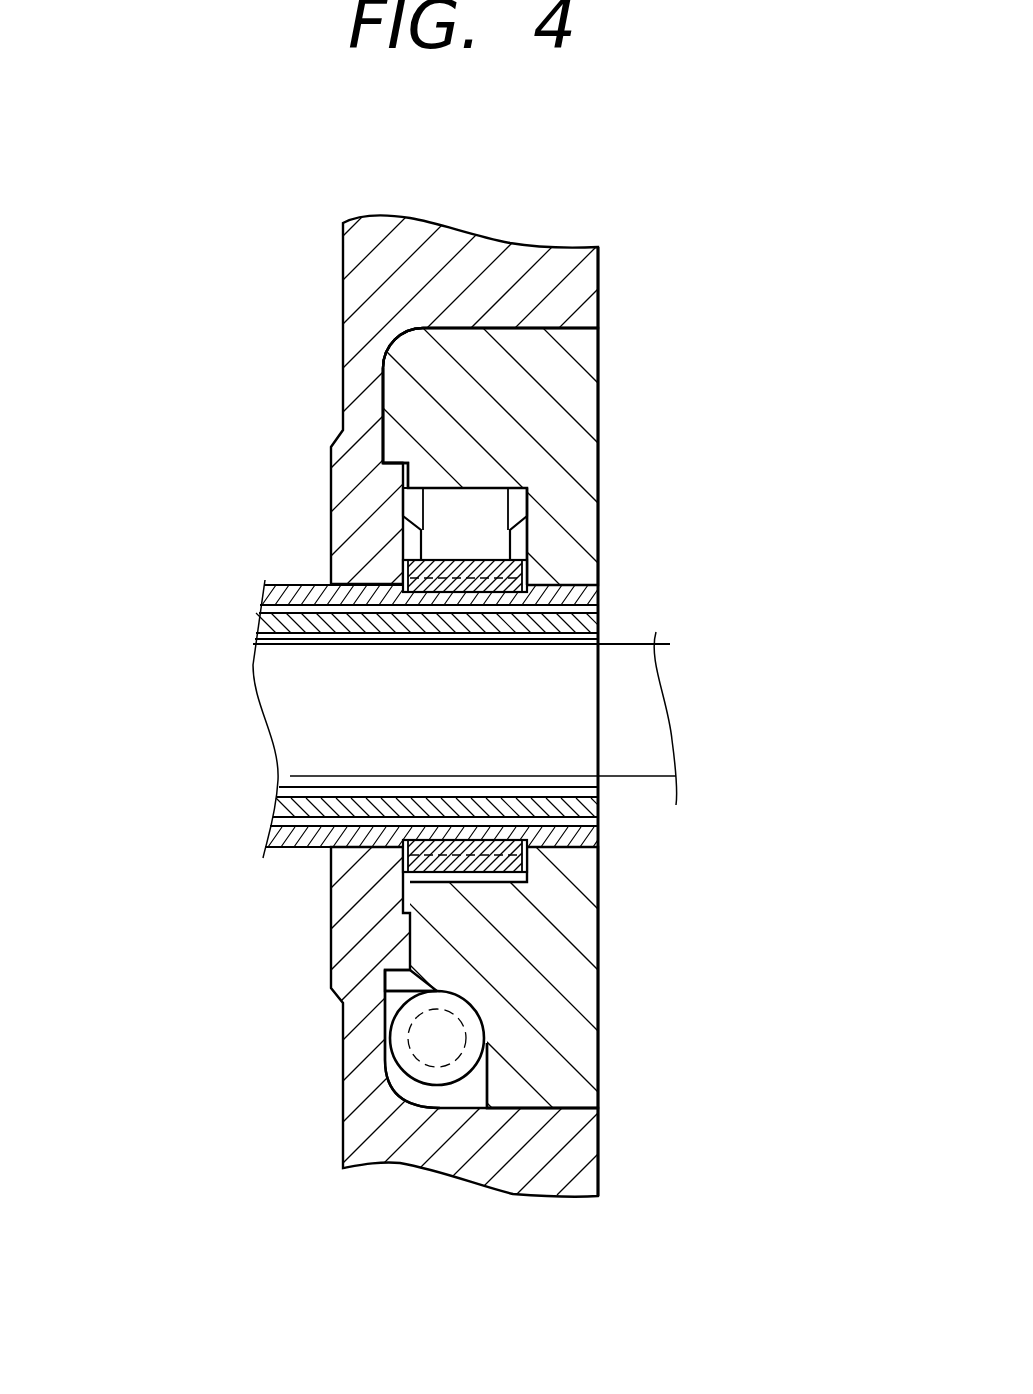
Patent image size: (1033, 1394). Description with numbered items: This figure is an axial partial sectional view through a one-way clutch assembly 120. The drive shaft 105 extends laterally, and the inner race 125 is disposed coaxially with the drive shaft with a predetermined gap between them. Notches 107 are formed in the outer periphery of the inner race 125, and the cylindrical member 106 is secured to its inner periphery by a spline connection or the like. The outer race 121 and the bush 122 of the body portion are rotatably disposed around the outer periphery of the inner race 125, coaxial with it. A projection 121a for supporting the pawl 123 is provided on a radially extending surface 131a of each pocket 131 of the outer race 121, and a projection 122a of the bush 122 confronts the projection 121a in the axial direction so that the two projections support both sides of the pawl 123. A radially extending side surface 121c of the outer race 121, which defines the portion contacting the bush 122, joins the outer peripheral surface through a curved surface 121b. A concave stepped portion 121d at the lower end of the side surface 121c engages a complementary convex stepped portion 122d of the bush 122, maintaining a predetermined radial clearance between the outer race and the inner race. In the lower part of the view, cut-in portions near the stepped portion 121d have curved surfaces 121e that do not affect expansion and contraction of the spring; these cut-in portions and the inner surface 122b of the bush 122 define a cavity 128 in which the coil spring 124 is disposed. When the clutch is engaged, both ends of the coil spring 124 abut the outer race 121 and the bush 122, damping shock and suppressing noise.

The bearing unit 120 is at (745, 230).
The bush 122 is at (357, 238).
The convex stepped portion 122d is at (387, 462).
The curved surface 121b is at (420, 336).
The radially extending side surface 121c is at (387, 405).
The stepped portion 121d is at (407, 468).
The projection 122a is at (400, 537).
The cylindrical member 106 is at (265, 620).
The inner race 125 is at (280, 838).
The drive shaft 105 is at (645, 706).
The pocket 131 is at (533, 493).
The radially extending surface 131a is at (513, 527).
The pawl 123 is at (560, 540).
The projection 121a is at (563, 543).
The notches 107 is at (533, 568).
The curved surfaces 121e is at (470, 1018).
The outer race 121 is at (600, 990).
The cavity 128 is at (477, 1095).
The inner surface 122b is at (403, 1064).
The coil spring 124 is at (438, 1078).